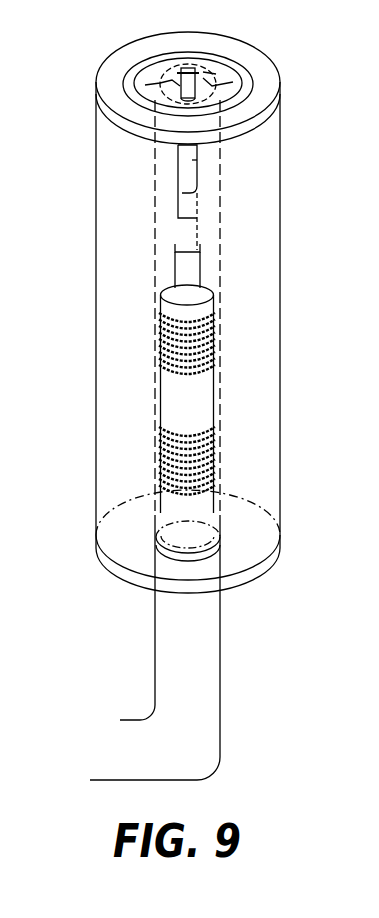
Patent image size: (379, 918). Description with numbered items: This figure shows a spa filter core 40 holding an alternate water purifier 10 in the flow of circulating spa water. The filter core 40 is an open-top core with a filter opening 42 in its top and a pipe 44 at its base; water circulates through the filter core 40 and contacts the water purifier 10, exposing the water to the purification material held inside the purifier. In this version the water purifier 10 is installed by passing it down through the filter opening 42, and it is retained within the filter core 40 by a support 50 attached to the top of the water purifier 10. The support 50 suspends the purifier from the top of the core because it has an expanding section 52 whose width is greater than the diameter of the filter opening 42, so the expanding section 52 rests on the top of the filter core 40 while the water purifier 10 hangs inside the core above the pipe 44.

The water purifier 10 is at (162, 412).
The spa filter core 40 is at (265, 252).
The filter opening 42 is at (204, 70).
The pipe 44 is at (221, 757).
The support 50 is at (157, 161).
The expanding section 52 is at (222, 62).